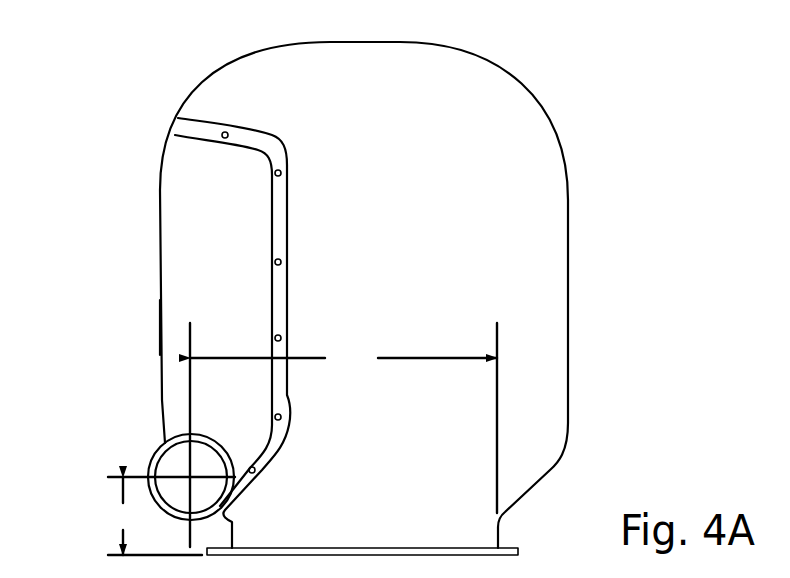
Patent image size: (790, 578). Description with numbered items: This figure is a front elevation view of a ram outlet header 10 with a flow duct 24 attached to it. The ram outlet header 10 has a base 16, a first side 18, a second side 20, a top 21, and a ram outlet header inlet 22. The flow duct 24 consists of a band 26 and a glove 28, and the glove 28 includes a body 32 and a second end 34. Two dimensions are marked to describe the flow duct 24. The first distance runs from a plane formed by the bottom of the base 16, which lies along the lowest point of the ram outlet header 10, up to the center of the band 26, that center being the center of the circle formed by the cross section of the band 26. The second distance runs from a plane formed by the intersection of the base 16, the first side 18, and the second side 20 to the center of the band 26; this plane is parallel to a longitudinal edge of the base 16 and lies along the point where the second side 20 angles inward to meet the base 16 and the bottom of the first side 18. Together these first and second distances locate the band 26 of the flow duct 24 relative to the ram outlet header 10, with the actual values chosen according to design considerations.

The ram outlet header 10 is at (630, 84).
The base 16 is at (520, 552).
The first side 18 is at (520, 200).
The second side 20 is at (568, 312).
The top 21 is at (363, 46).
The ram outlet header inlet 22 is at (202, 107).
The flow duct 24 is at (90, 243).
The band 26 is at (148, 462).
The glove 28 is at (160, 327).
The body 32 is at (173, 363).
The second end 34 is at (174, 152).